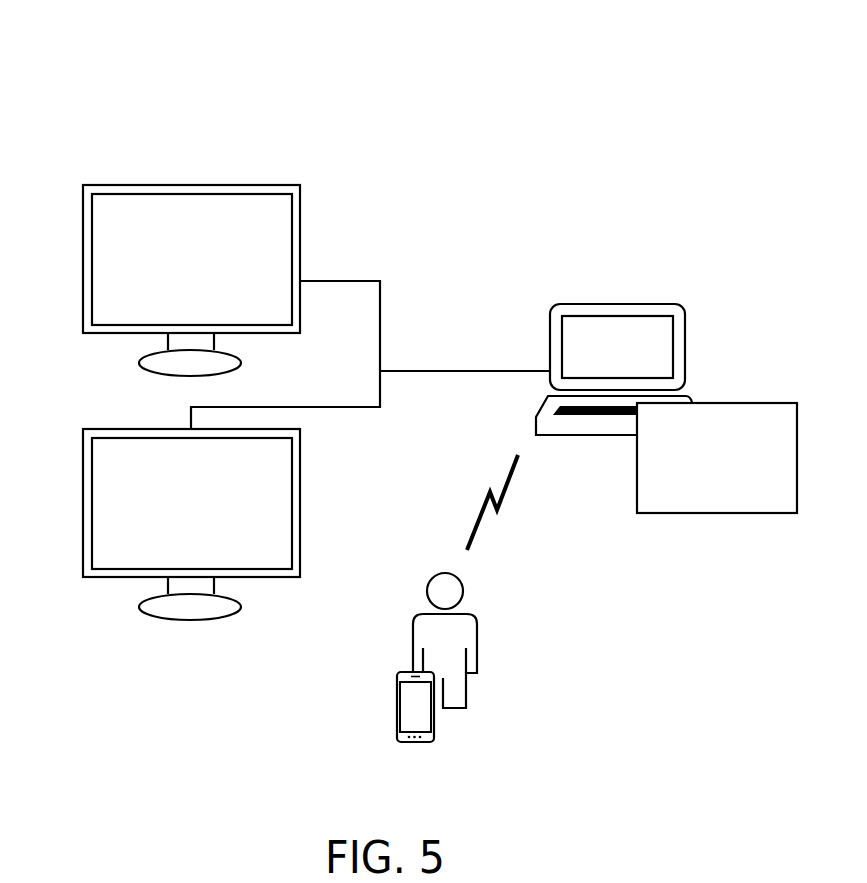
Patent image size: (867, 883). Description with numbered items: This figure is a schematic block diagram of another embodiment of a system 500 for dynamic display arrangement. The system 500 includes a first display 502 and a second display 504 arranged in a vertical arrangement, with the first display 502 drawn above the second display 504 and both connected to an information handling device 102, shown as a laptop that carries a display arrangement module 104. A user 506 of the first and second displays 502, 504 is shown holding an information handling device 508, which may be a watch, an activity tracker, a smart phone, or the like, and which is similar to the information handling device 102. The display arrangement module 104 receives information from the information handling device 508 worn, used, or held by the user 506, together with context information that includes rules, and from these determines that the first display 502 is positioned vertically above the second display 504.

The system for dynamic display arrangement 500 is at (95, 71).
The first display 502 is at (209, 266).
The second display 504 is at (209, 510).
The information handling device 102 is at (550, 334).
The display arrangement module 104 is at (699, 508).
The user 506 is at (479, 640).
The information handling device 508 is at (396, 706).